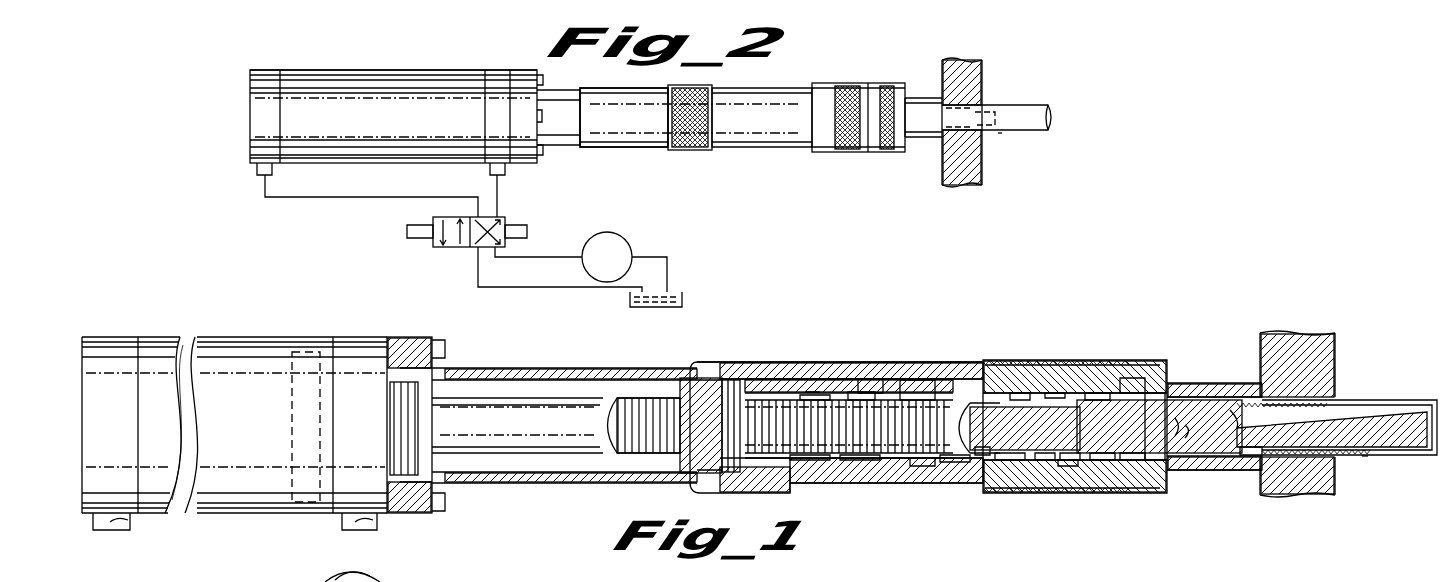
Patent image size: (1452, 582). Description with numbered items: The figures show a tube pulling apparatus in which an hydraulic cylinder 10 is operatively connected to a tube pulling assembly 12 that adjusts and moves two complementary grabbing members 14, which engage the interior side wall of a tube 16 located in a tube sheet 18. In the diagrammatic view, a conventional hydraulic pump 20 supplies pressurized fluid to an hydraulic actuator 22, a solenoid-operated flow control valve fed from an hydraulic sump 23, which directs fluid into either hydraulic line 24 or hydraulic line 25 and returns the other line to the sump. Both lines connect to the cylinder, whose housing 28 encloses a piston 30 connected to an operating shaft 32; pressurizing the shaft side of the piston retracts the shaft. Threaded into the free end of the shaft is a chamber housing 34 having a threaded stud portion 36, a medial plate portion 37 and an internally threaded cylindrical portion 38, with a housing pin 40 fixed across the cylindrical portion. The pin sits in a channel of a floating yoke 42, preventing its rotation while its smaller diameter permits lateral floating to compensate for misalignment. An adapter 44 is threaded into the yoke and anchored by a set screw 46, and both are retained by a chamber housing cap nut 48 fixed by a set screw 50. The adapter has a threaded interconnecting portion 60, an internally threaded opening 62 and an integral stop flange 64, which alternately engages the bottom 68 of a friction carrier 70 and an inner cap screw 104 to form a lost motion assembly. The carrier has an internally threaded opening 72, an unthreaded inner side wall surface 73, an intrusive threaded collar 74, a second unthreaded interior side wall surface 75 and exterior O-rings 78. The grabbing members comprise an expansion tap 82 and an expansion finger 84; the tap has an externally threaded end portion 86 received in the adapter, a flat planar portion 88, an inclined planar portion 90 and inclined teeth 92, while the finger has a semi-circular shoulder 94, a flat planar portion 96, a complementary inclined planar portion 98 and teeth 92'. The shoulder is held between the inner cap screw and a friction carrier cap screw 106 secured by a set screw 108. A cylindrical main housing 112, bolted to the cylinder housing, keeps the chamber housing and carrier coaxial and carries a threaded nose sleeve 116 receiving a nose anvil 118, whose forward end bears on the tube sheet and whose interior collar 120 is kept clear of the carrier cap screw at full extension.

In FIG. 2, the hydraulic cylinder 10 is at (396, 116).
In FIG. 1, the hydraulic cylinder 10 is at (245, 337).
In FIG. 2, the tube pulling assembly 12 is at (770, 163).
In FIG. 1, the tube pulling assembly 12 is at (1051, 314).
In FIG. 2, the grabbing members 14 is at (1000, 135).
In FIG. 1, the grabbing members 14 is at (1373, 463).
In FIG. 2, the tube 16 is at (1018, 105).
In FIG. 1, the tube 16 is at (1398, 455).
In FIG. 2, the tube sheet 18 is at (982, 70).
In FIG. 1, the tube sheet 18 is at (1335, 348).
In FIG. 2, the hydraulic pump 20 is at (622, 240).
In FIG. 2, the hydraulic actuator 22 is at (452, 247).
In FIG. 2, the hydraulic sump 23 is at (682, 300).
In FIG. 2, the hydraulic line 24 is at (500, 196).
In FIG. 1, the hydraulic line 24 is at (377, 522).
In FIG. 2, the hydraulic line 25 is at (353, 200).
In FIG. 1, the hydraulic line 25 is at (130, 522).
In FIG. 2, the housing 28 is at (420, 70).
In FIG. 1, the housing 28 is at (180, 402).
In FIG. 1, the piston 30 is at (290, 430).
In FIG. 1, the operating shaft 32 is at (517, 425).
In FIG. 1, the chamber housing 34 is at (700, 465).
In FIG. 1, the threaded stud portion 36 is at (637, 398).
In FIG. 1, the medial plate portion 37 is at (702, 386).
In FIG. 1, the internally threaded cylindrical portion 38 is at (856, 462).
In FIG. 1, the housing pin 40 is at (733, 382).
In FIG. 1, the floating yoke 42 is at (803, 456).
In FIG. 1, the adapter 44 is at (872, 465).
In FIG. 1, the set screw 46 is at (808, 396).
In FIG. 1, the chamber housing cap nut 48 is at (890, 380).
In FIG. 1, the set screw 50 is at (860, 392).
In FIG. 1, the threaded interconnecting portion 60 is at (755, 470).
In FIG. 1, the internally threaded opening 62 is at (975, 407).
In FIG. 1, the stop flange 64 is at (1020, 393).
In FIG. 1, the bottom 68 is at (917, 392).
In FIG. 1, the friction carrier 70 is at (952, 470).
In FIG. 1, the internally threaded opening 72 is at (1105, 462).
In FIG. 1, the unthreaded inner side wall surface 73 is at (1072, 462).
In FIG. 1, the intrusive threaded collar 74 is at (1063, 468).
In FIG. 1, the second unthreaded interior side wall surface 75 is at (983, 456).
In FIG. 1, the O-rings 78 is at (930, 470).
In FIG. 1, the expansion tap 82 is at (1240, 458).
In FIG. 1, the expansion finger 84 is at (1200, 400).
In FIG. 1, the externally threaded end portion 86 is at (1006, 462).
In FIG. 1, the flat planar portion 88 is at (1178, 430).
In FIG. 1, the inclined planar portion 90 is at (1373, 412).
In FIG. 1, the inclined teeth 92 is at (1316, 466).
In FIG. 1, the teeth 92' is at (1278, 383).
In FIG. 1, the semi-circular shoulder 94 is at (1096, 393).
In FIG. 1, the flat planar portion 96 is at (1197, 428).
In FIG. 1, the inclined planar portion 98 is at (1330, 415).
In FIG. 1, the inner cap screw 104 is at (1046, 462).
In FIG. 1, the friction carrier cap screw 106 is at (1140, 462).
In FIG. 1, the set screw 108 is at (1130, 378).
In FIG. 2, the main housing 112 is at (640, 147).
In FIG. 1, the main housing 112 is at (562, 368).
In FIG. 2, the nose sleeve 116 is at (832, 83).
In FIG. 1, the nose sleeve 116 is at (1000, 362).
In FIG. 2, the nose anvil 118 is at (920, 137).
In FIG. 1, the nose anvil 118 is at (1220, 470).
In FIG. 1, the interior collar 120 is at (1148, 392).